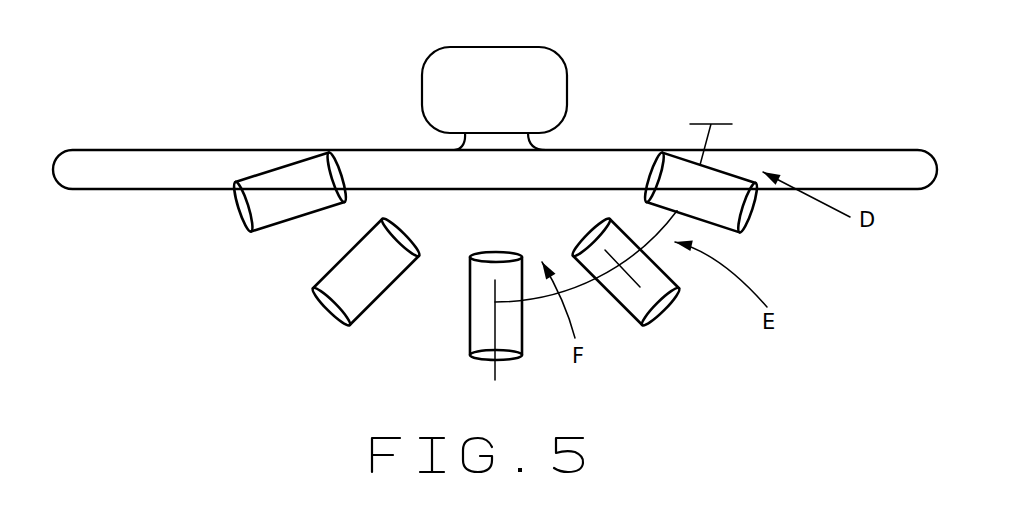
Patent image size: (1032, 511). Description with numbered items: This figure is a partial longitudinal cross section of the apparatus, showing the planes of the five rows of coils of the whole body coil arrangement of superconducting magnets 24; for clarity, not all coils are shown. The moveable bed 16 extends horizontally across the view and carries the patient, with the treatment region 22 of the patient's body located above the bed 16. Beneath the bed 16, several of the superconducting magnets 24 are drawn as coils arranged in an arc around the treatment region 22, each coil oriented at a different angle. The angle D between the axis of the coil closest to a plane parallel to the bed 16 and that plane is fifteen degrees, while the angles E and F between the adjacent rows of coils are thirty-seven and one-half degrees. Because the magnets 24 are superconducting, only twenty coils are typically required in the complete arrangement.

The moveable bed 16 is at (235, 148).
The treatment region 22 is at (548, 47).
The superconducting magnets 24 is at (270, 231).